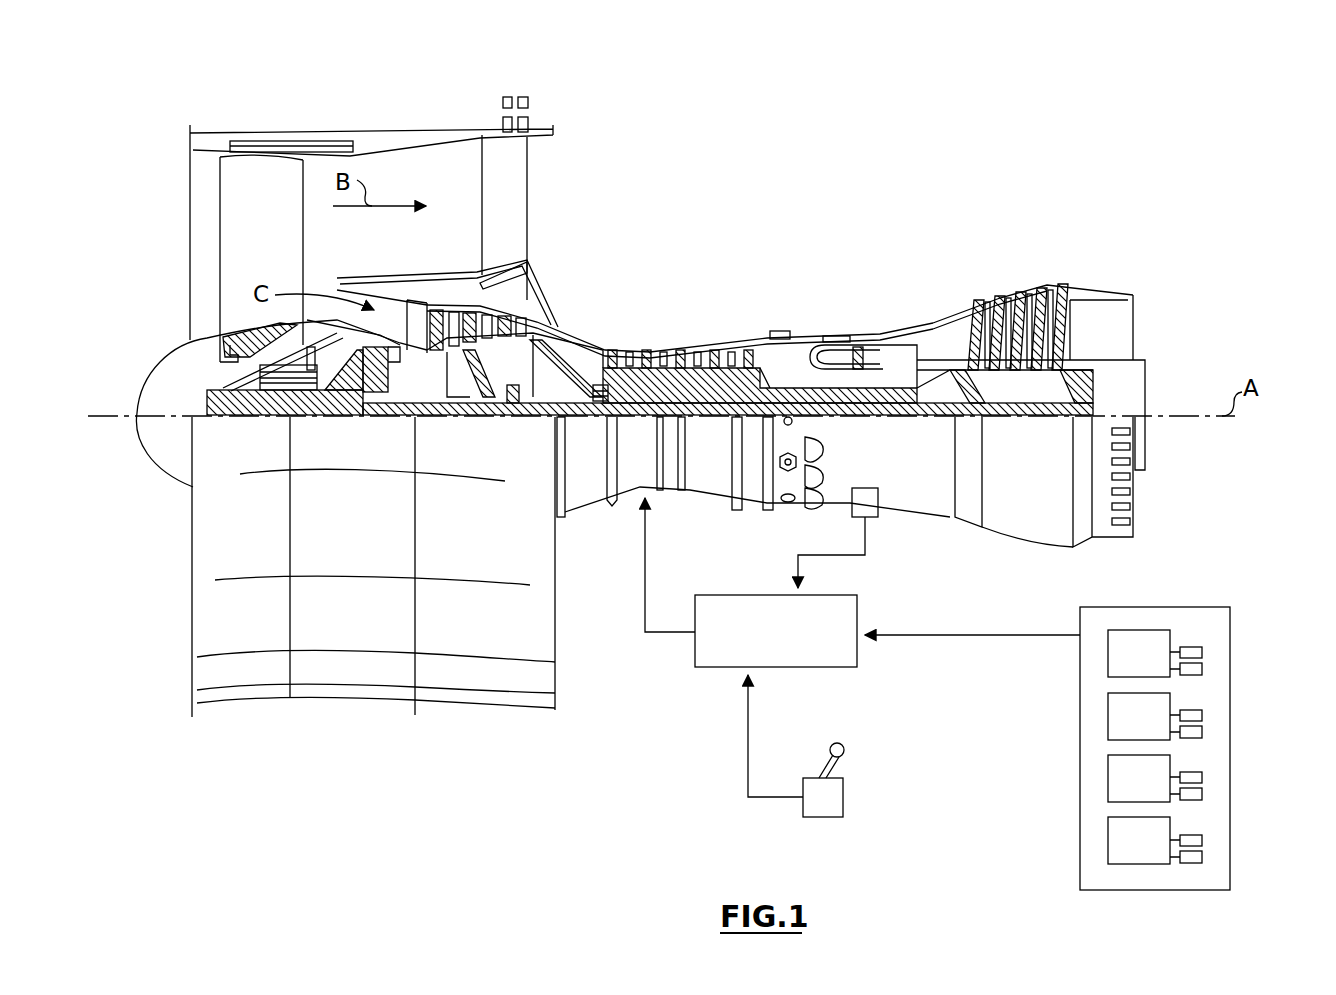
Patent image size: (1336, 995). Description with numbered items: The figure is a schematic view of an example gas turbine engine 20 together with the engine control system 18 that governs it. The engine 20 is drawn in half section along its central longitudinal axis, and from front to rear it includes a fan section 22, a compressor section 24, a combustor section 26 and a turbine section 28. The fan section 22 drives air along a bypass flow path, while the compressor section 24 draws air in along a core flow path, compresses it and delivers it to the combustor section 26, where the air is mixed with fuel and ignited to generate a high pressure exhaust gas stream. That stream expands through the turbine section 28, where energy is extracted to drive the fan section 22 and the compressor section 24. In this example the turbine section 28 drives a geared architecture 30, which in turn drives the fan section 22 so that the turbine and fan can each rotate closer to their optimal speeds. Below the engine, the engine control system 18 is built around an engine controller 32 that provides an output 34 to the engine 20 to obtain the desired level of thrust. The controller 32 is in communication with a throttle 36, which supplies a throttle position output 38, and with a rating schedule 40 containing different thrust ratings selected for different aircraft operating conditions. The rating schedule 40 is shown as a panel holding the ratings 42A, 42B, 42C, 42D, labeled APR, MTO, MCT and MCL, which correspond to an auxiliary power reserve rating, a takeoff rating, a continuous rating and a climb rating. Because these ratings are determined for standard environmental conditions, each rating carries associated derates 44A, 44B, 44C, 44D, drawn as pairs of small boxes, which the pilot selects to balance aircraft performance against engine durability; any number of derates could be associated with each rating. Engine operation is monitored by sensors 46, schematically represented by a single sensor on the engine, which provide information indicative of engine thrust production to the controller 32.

The engine control system 18 is at (667, 697).
The gas turbine engine 20 is at (840, 178).
The fan section 22 is at (400, 105).
The compressor section 24 is at (813, 249).
The combustor section 26 is at (917, 249).
The turbine section 28 is at (1095, 249).
The geared architecture 30 is at (381, 402).
The engine controller 32 is at (857, 618).
The output 34 is at (645, 563).
The throttle 36 is at (843, 800).
The throttle position output 38 is at (748, 785).
The rating schedule 40 is at (1208, 606).
The rating 42A is at (1108, 652).
The rating 42B is at (1108, 715).
The rating 42C is at (1108, 777).
The rating 42D is at (1108, 840).
The derate 44A is at (1205, 663).
The derate 44B is at (1205, 726).
The derate 44C is at (1205, 788).
The derate 44D is at (1205, 851).
The sensor 46 is at (873, 517).